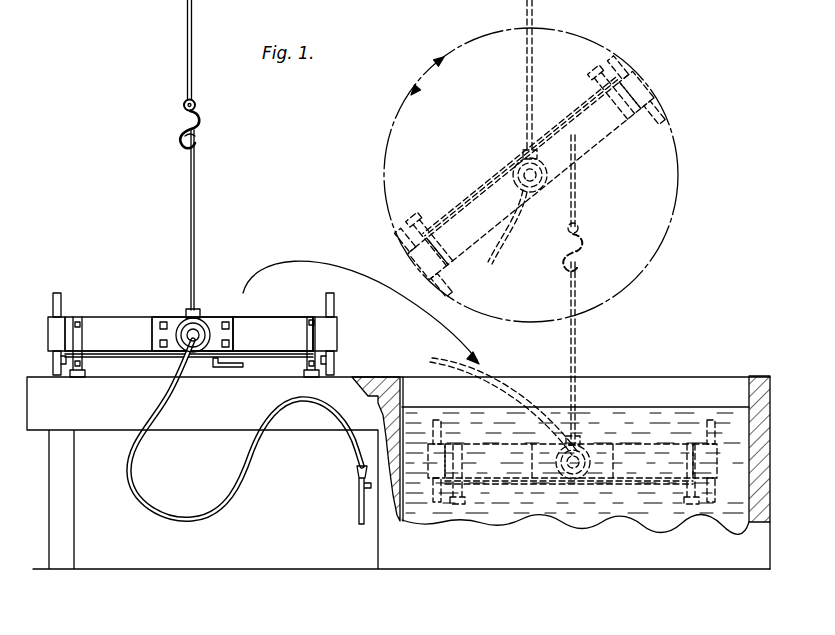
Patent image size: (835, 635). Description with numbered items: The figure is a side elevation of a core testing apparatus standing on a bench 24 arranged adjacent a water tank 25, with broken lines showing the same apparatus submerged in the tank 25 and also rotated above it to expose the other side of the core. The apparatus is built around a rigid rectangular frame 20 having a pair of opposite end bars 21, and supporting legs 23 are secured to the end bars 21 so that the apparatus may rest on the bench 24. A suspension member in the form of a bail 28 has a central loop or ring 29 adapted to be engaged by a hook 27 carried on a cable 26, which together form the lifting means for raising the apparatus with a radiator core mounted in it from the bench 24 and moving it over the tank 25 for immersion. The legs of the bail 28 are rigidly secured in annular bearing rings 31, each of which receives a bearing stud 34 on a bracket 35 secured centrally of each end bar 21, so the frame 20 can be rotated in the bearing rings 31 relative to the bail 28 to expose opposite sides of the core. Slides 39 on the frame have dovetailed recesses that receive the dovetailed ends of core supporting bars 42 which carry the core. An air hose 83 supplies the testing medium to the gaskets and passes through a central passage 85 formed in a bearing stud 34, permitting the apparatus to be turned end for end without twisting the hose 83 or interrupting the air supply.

The frame 20 is at (209, 334).
The end bars 21 is at (189, 344).
The supporting legs 23 is at (84, 334).
The bench 24 is at (398, 473).
The water tank 25 is at (706, 388).
The cable 26 is at (186, 42).
The hook 27 is at (206, 130).
The bail 28 is at (195, 208).
The central loop or ring 29 is at (190, 148).
The bearing rings 31 is at (186, 322).
The bearing stud 34 is at (203, 322).
The bracket 35 is at (230, 333).
The slides 39 is at (60, 303).
The core supporting bars 42 is at (137, 355).
The air hose 83 is at (249, 458).
The central bore or passage 85 is at (198, 321).